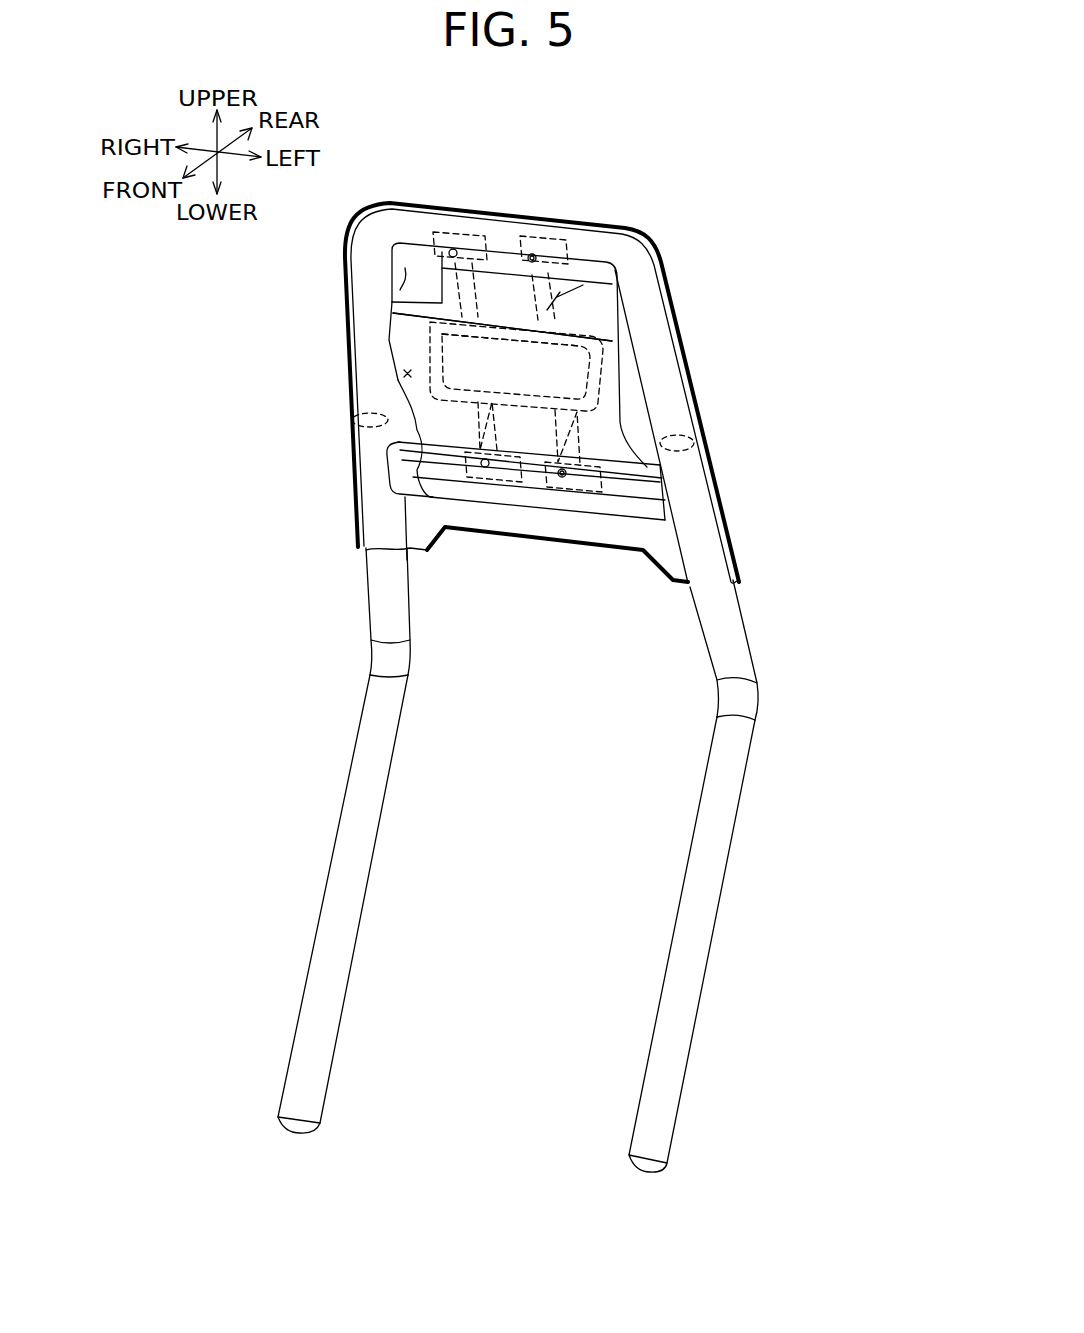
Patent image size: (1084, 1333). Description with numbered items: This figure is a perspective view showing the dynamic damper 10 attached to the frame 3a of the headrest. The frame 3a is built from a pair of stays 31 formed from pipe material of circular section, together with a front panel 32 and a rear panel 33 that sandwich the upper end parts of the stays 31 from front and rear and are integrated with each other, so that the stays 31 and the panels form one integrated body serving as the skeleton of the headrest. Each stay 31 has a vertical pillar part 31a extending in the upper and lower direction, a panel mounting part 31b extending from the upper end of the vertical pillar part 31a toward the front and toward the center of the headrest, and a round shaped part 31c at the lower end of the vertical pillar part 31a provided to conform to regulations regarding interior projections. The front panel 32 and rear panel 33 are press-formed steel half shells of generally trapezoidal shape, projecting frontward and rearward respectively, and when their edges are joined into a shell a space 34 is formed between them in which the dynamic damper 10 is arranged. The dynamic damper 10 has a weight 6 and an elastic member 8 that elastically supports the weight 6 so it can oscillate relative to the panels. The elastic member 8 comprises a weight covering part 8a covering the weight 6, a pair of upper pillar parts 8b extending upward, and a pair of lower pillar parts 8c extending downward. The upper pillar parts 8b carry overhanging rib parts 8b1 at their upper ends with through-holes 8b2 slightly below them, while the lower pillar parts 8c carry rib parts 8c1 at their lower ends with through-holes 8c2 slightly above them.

The frame 3a is at (691, 244).
The weight 6 is at (483, 372).
The elastic member 8 is at (613, 362).
The weight covering part 8a is at (600, 366).
The upper pillar parts 8b is at (580, 305).
The rib parts 8b1 is at (540, 252).
The through-holes 8b2 is at (532, 254).
The lower pillar parts 8c is at (580, 438).
The rib parts 8c1 is at (572, 487).
The through-holes 8c2 is at (562, 477).
The dynamic damper 10 is at (420, 347).
The stays 31 is at (559, 894).
The vertical pillar part 31a is at (368, 857).
The panel mounting part 31b is at (383, 600).
The round shaped part 31c is at (297, 1127).
The front panel 32 is at (373, 395).
The rear panel 33 is at (718, 470).
The space 34 is at (400, 373).